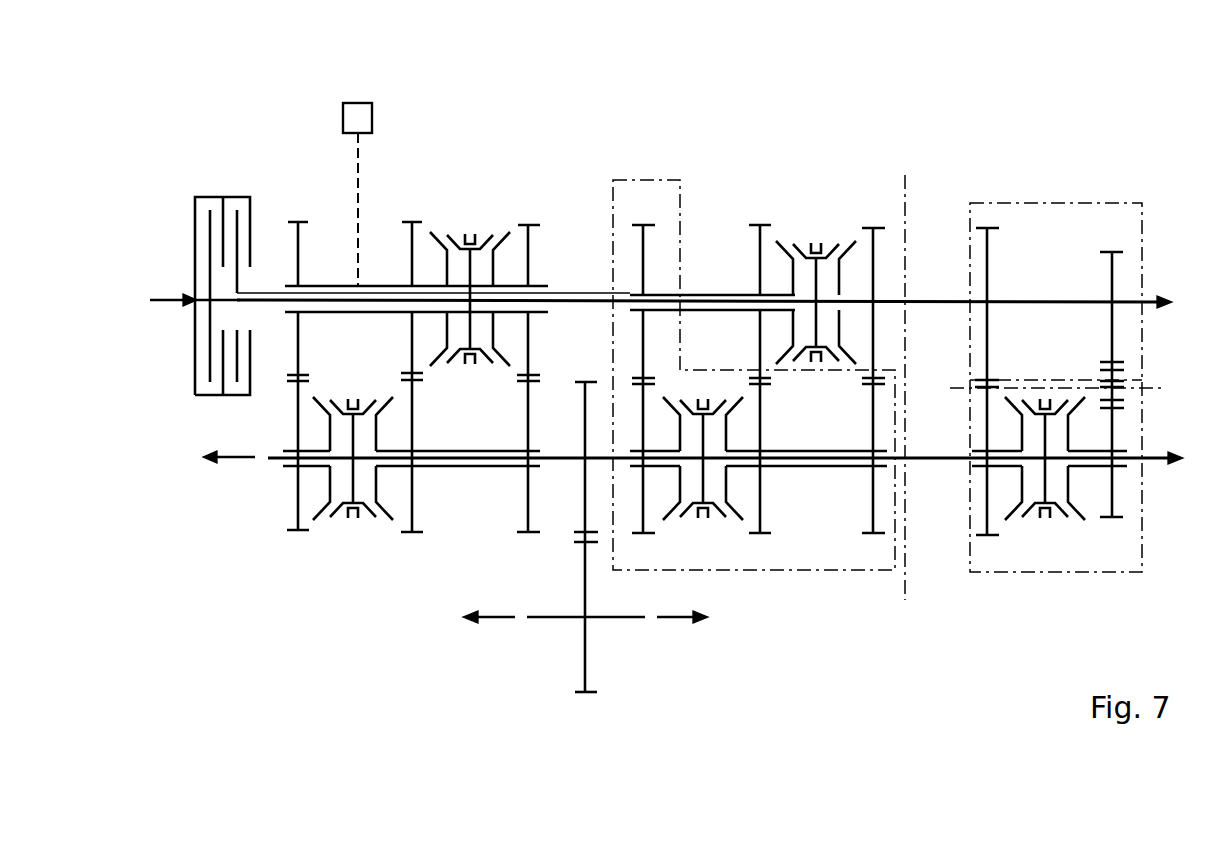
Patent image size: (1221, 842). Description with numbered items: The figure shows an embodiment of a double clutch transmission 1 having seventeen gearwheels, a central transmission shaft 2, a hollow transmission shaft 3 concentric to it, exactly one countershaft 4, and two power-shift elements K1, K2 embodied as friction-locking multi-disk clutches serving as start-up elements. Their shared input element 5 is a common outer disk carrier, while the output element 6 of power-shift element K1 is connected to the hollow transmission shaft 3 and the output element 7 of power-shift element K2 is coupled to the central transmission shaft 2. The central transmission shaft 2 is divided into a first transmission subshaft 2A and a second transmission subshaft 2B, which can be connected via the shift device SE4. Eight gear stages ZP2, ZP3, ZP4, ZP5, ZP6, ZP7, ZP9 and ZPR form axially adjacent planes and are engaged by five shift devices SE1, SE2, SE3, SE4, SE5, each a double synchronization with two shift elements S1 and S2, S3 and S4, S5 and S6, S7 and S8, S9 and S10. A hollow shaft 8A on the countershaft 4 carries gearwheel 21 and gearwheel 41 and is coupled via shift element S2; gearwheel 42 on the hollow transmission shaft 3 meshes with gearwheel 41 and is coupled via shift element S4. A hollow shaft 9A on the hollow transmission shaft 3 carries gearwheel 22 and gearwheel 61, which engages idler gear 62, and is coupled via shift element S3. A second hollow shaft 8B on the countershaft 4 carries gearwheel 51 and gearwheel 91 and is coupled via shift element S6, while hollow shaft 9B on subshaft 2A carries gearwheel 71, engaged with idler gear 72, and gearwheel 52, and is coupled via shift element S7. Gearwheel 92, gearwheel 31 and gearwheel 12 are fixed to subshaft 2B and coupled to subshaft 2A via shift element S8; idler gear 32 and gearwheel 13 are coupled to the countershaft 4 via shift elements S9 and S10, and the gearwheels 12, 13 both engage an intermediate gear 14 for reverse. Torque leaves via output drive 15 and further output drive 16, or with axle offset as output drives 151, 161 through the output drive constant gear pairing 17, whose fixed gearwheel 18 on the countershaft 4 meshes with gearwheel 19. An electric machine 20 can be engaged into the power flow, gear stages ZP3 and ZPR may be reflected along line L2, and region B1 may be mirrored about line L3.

The double clutch transmission 1 is at (197, 130).
The central transmission shaft 2 is at (575, 298).
The first transmission subshaft 2A is at (560, 314).
The second transmission subshaft 2B is at (920, 300).
The hollow transmission shaft 3 is at (270, 290).
The countershaft 4 is at (924, 462).
The input element 5 is at (218, 197).
The output element 6 is at (237, 232).
The output element 7 is at (208, 350).
The hollow shaft 8A is at (429, 559).
The second hollow shaft 8B is at (830, 470).
The hollow shaft 9A is at (328, 282).
The hollow shaft 9B is at (700, 294).
The gearwheel 12 is at (1110, 290).
The gearwheel 13 is at (1114, 498).
The intermediate gear 14 is at (1122, 372).
The output drive 15 is at (1166, 464).
The further output drive 16 is at (236, 460).
The output drive constant gear pairing 17 is at (571, 537).
The gearwheel 18 is at (583, 425).
The gearwheel 19 is at (588, 650).
The electric machine 20 is at (356, 113).
The gearwheel 21 is at (413, 437).
The gearwheel 22 is at (411, 243).
The gearwheel 31 is at (989, 288).
The gearwheel 32 is at (985, 422).
The gearwheel 41 is at (520, 482).
The gearwheel 42 is at (530, 245).
The gearwheel 51 is at (760, 490).
The gearwheel 52 is at (760, 245).
The gearwheel 61 is at (300, 243).
The gearwheel 62 is at (300, 390).
The gearwheel 71 is at (645, 277).
The gearwheel 72 is at (641, 487).
The gearwheel 91 is at (871, 496).
The gearwheel 92 is at (875, 242).
The axle-offset output drive 151 is at (672, 622).
The axle-offset further output drive 161 is at (492, 622).
The power-shift element K1 is at (244, 398).
The power-shift element K2 is at (210, 397).
The shift element S1 is at (325, 520).
The shift element S2 is at (380, 520).
The shift element S3 is at (443, 242).
The shift element S4 is at (499, 245).
The shift element S5 is at (670, 522).
The shift element S6 is at (734, 522).
The shift element S7 is at (790, 250).
The shift element S8 is at (845, 250).
The shift element S9 is at (1010, 522).
The shift element S10 is at (1072, 522).
The shift device SE1 is at (353, 521).
The shift device SE2 is at (470, 234).
The shift device SE3 is at (705, 528).
The shift device SE4 is at (817, 236).
The shift device SE5 is at (1044, 528).
The gear stage ZP2 is at (298, 533).
The gear stage ZP3 is at (988, 224).
The gear stage ZP4 is at (528, 224).
The gear stage ZP5 is at (761, 224).
The gear stage ZP6 is at (408, 536).
The gear stage ZP7 is at (644, 224).
The gear stage ZP9 is at (874, 226).
The gear stage ZPR is at (1112, 247).
The line L2 is at (1143, 361).
The line L3 is at (907, 176).
The region B1 is at (873, 574).